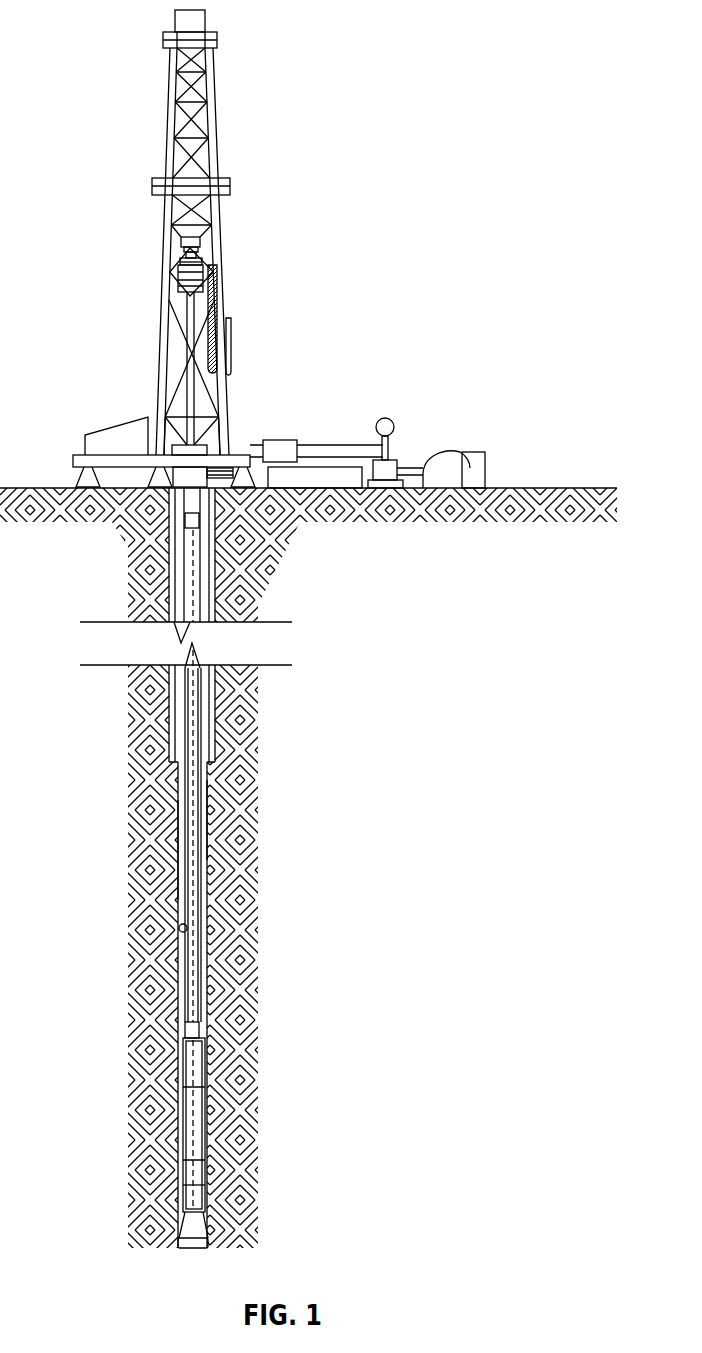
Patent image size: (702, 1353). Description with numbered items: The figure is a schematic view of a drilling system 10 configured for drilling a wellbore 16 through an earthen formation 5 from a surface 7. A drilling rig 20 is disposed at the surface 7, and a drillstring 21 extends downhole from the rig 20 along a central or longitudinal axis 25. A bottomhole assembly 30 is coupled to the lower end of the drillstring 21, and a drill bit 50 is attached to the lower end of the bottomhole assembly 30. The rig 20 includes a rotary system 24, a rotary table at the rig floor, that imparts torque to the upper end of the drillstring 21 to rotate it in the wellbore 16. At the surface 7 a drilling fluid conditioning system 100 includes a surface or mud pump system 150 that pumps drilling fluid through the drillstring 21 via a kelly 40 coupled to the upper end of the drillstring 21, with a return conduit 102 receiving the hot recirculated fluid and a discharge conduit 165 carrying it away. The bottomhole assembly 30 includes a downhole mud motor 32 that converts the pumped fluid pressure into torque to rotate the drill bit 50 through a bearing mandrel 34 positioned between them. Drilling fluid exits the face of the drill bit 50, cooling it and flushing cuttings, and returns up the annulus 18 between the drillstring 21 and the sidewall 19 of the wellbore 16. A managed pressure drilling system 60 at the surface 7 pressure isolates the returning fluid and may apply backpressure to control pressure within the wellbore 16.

The earthen formation 5 is at (327, 929).
The surface 7 is at (568, 488).
The drilling system 10 is at (388, 110).
The wellbore 16 is at (207, 1073).
The annulus 18 is at (203, 862).
The sidewall 19 is at (180, 925).
The drilling rig 20 is at (226, 310).
The drillstring 21 is at (201, 812).
The rotary system 24 is at (226, 447).
The central or longitudinal axis 25 is at (188, 850).
The bottomhole assembly 30 is at (161, 1135).
The downhole mud motor 32 is at (190, 1117).
The bearing mandrel 34 is at (190, 1175).
The kelly 40 is at (193, 277).
The drill bit 50 is at (195, 1230).
The managed pressure drilling system 60 is at (185, 477).
The drilling fluid conditioning system 100 is at (368, 411).
The return conduit 102 is at (272, 522).
The surface or mud pump system 150 is at (442, 460).
The discharge conduit 165 is at (335, 447).